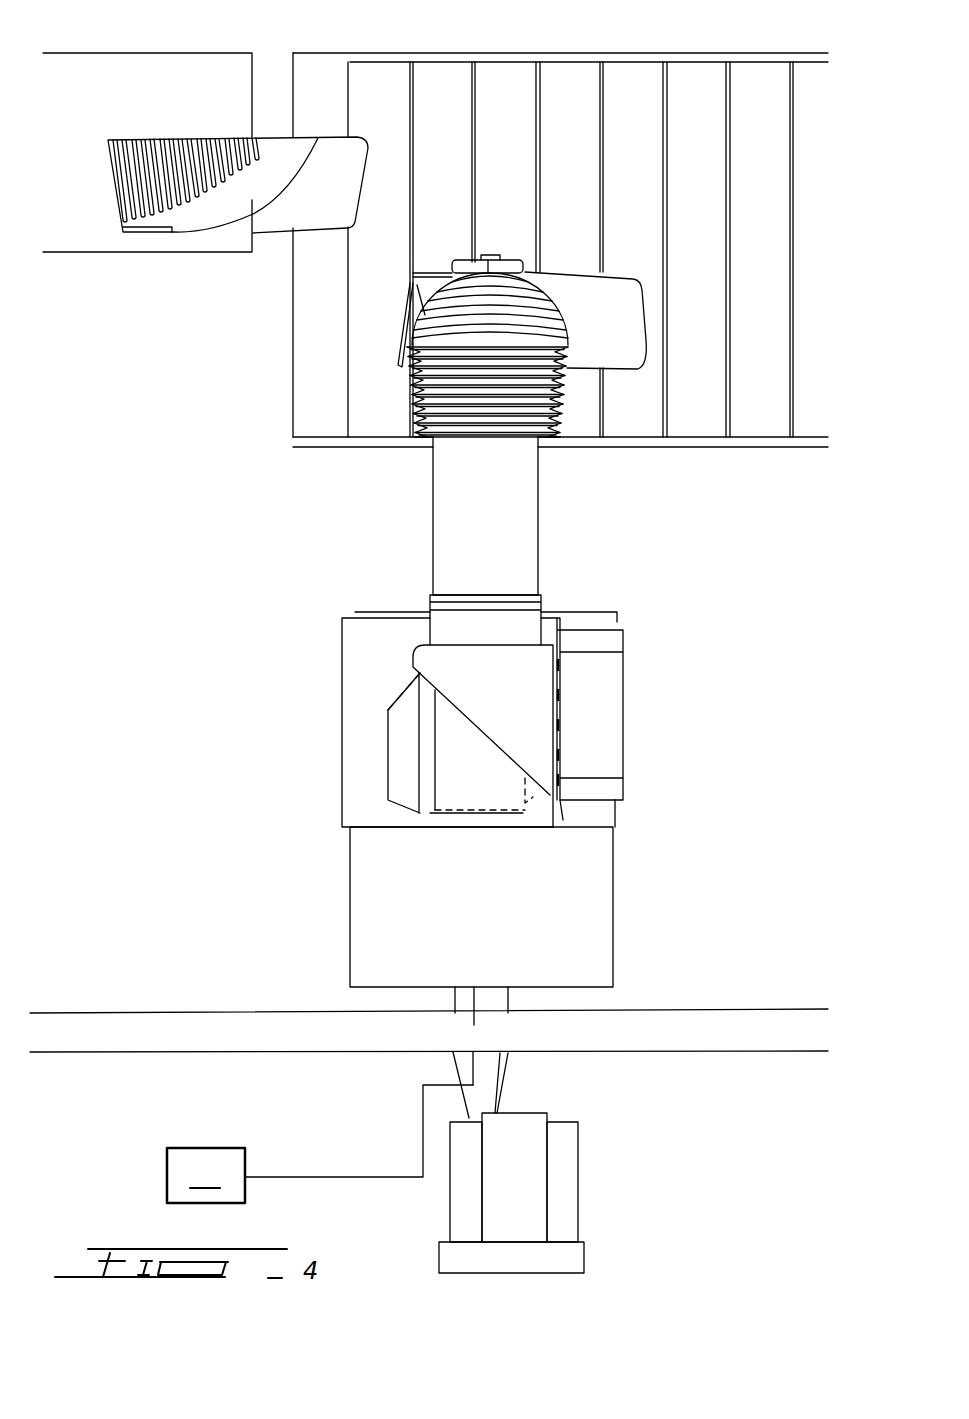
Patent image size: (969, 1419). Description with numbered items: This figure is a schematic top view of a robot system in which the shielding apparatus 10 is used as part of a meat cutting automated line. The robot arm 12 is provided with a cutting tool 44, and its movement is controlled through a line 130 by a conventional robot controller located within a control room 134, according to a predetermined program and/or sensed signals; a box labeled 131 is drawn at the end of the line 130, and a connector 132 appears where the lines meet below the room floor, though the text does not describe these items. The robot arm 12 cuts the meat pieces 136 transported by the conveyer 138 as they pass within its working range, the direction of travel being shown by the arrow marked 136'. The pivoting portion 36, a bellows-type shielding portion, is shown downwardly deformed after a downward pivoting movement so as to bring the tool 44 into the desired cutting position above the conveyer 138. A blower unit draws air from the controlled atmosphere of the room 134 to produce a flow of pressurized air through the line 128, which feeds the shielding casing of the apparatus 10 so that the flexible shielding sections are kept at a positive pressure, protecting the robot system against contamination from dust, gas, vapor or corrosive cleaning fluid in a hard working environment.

The apparatus 10 is at (392, 546).
The robot arm 12 is at (370, 795).
The pivoting portion 36 is at (507, 343).
The cutting tool 44 is at (467, 262).
The line 128 is at (508, 1070).
The line 130 is at (320, 1144).
The controller unit 131 is at (206, 1175).
The electrical connector 132 is at (560, 1180).
The control room 134 is at (695, 1028).
The meat pieces 136 is at (480, 192).
The cover member displaced position 136' is at (684, 16).
The conveyer 138 is at (692, 108).